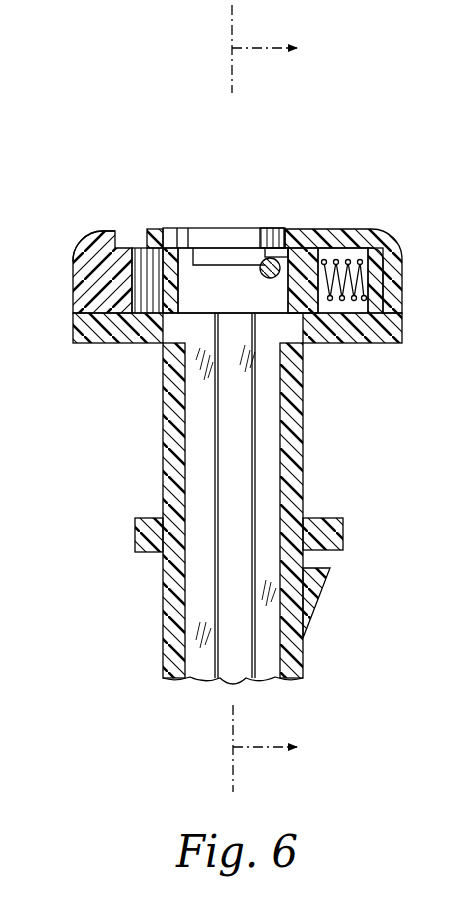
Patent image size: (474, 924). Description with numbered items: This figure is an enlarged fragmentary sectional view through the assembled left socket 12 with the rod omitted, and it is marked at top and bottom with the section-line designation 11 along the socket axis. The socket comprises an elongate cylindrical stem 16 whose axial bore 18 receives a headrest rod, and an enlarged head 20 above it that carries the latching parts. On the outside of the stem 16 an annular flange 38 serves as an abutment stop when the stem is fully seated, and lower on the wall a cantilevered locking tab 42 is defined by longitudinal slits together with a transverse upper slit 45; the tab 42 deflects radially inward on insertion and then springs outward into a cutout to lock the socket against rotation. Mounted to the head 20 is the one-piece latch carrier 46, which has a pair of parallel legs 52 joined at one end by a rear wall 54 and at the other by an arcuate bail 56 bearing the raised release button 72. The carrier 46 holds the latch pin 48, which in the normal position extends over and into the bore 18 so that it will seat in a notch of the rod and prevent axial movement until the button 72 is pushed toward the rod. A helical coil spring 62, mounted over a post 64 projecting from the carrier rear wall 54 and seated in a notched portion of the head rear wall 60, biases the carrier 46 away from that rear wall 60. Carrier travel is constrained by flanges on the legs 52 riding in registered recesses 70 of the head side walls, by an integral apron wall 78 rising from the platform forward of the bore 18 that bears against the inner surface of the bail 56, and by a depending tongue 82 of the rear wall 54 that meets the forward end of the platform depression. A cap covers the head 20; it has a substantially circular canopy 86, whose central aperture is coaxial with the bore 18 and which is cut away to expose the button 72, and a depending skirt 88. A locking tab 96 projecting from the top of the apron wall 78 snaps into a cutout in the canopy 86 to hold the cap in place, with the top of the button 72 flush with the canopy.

The section line 11 is at (288, 398).
The left socket 12 is at (283, 510).
The cylindrical stem 16 is at (305, 445).
The axial bore 18 is at (230, 428).
The head 20 is at (267, 357).
The annular flange 38 is at (140, 532).
The locking tab 42 is at (308, 598).
The transverse upper slit 45 is at (298, 558).
The latch carrier 46 is at (215, 258).
The latch pin 48 is at (265, 257).
The legs 52 is at (271, 228).
The rear wall 54 is at (316, 251).
The bail 56 is at (75, 262).
The rear wall 60 is at (396, 257).
The helical coil spring 62 is at (356, 256).
The post 64 is at (345, 268).
The recesses 70 is at (240, 247).
The release button 72 is at (97, 228).
The apron wall 78 is at (148, 285).
The tongue 82 is at (303, 313).
The canopy 86 is at (332, 266).
The skirt 88 is at (400, 320).
The locking tab 96 is at (165, 228).